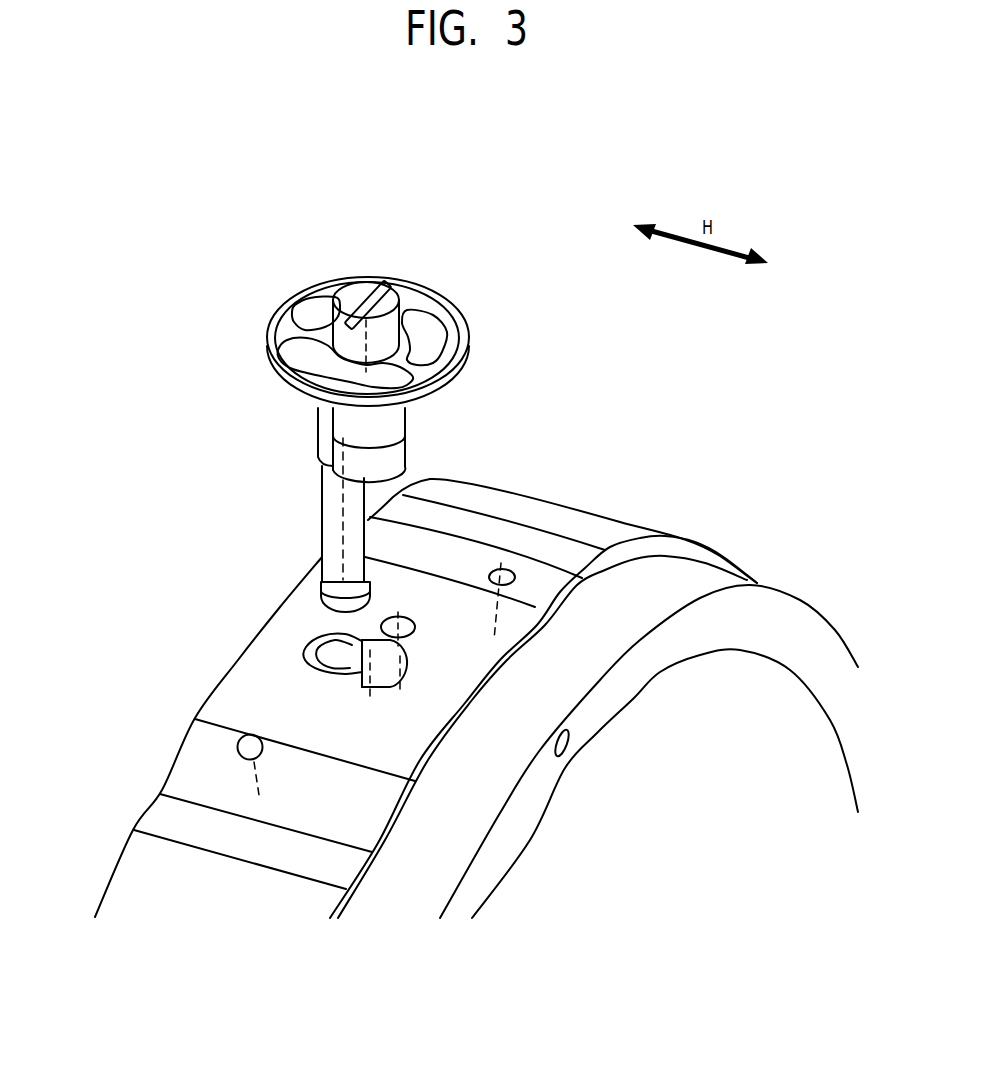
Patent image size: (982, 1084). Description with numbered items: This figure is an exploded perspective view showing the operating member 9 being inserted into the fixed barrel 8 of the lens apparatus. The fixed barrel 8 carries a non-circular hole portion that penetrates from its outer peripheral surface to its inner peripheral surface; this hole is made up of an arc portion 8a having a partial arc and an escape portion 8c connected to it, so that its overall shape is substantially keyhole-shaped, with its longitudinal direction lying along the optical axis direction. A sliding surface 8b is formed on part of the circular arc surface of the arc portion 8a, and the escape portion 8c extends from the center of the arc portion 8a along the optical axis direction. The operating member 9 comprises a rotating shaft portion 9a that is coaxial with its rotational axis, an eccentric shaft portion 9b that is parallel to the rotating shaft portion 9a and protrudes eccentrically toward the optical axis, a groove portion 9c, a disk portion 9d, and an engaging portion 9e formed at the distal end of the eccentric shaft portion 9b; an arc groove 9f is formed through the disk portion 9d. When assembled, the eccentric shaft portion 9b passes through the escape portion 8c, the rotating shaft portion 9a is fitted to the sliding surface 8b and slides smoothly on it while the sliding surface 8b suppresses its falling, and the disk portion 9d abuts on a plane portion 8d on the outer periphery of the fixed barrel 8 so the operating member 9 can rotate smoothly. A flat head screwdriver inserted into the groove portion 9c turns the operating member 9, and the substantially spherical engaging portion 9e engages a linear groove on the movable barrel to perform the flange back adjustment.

The fixed barrel 8 is at (702, 907).
The arc portion 8a is at (403, 680).
The sliding surface 8b is at (405, 671).
The escape portion 8c is at (307, 648).
The plane portion 8d is at (457, 638).
The operating member 9 is at (185, 284).
The rotating shaft portion 9a is at (362, 433).
The eccentric shaft portion 9b is at (327, 543).
The groove portion 9c is at (358, 298).
The disk portion 9d is at (285, 332).
The engaging portion 9e is at (322, 598).
The arc groove 9f is at (420, 320).